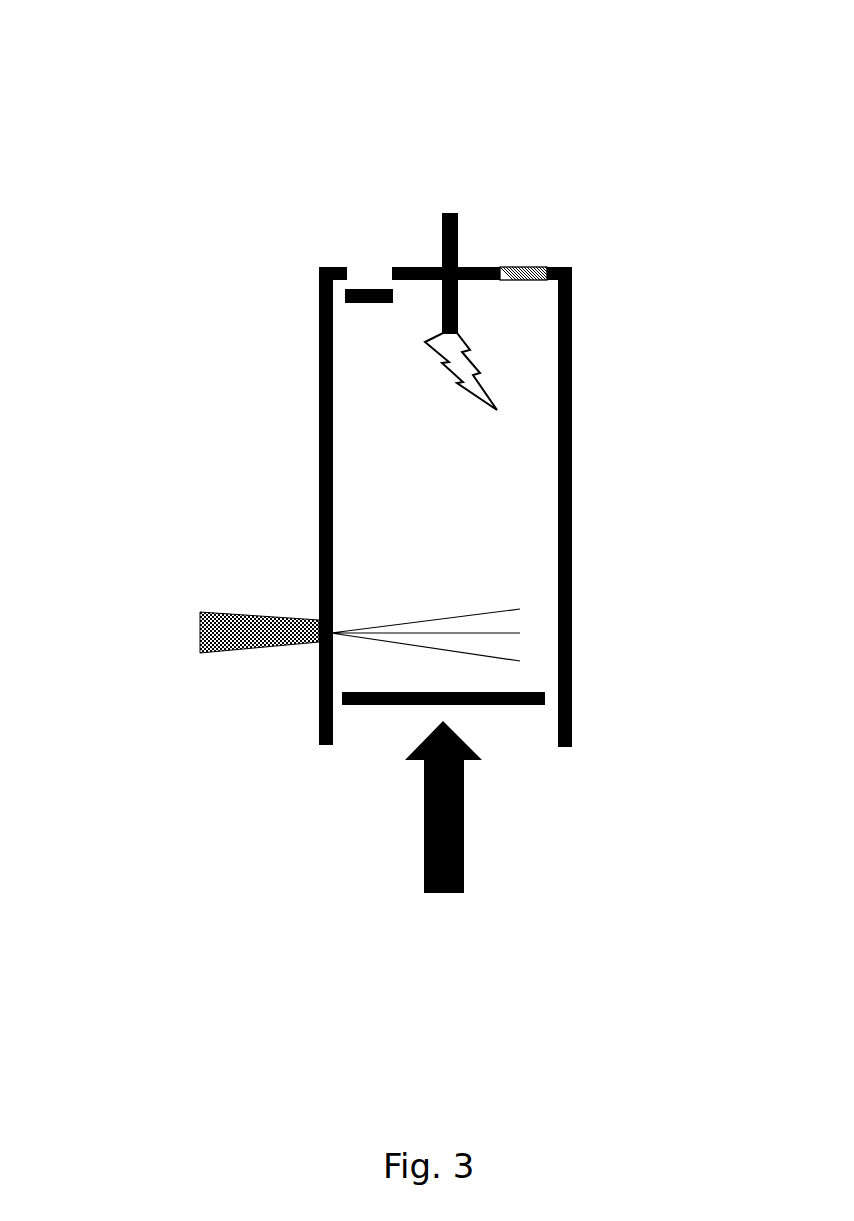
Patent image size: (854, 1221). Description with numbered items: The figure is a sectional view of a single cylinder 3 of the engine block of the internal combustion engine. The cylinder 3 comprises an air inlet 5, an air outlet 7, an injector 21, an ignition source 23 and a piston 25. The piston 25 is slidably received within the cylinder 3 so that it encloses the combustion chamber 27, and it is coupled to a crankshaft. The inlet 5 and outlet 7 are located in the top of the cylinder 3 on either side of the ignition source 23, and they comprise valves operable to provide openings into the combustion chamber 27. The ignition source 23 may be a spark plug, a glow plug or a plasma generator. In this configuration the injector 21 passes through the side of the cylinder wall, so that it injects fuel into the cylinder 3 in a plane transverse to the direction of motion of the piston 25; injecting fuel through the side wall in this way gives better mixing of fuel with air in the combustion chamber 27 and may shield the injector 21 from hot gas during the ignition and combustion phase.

The cylinder 3 is at (201, 95).
The air inlet 5 is at (343, 271).
The air outlet 7 is at (532, 267).
The injector 21 is at (310, 620).
The ignition source 23 is at (458, 252).
The piston 25 is at (517, 705).
The combustion chamber 27 is at (522, 451).